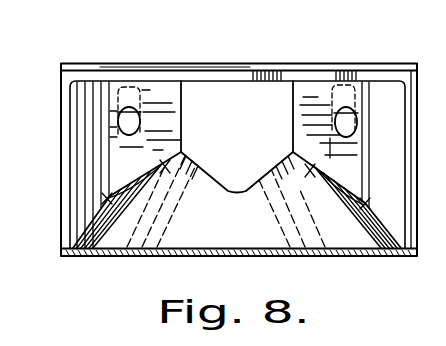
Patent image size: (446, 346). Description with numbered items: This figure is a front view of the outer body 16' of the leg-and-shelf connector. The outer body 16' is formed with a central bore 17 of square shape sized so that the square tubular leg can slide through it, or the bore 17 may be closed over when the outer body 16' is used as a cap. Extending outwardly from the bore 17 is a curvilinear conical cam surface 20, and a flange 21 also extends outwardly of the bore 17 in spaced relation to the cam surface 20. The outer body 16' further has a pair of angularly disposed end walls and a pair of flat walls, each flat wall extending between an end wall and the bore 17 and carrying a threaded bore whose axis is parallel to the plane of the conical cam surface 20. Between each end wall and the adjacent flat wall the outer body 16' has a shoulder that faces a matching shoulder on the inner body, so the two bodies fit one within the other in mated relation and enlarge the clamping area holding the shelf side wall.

The outer body 16' is at (217, 160).
The flange 21 is at (196, 70).
The partition wall 17 is at (293, 102).
The curvilinear conical cam surface 20 is at (299, 253).